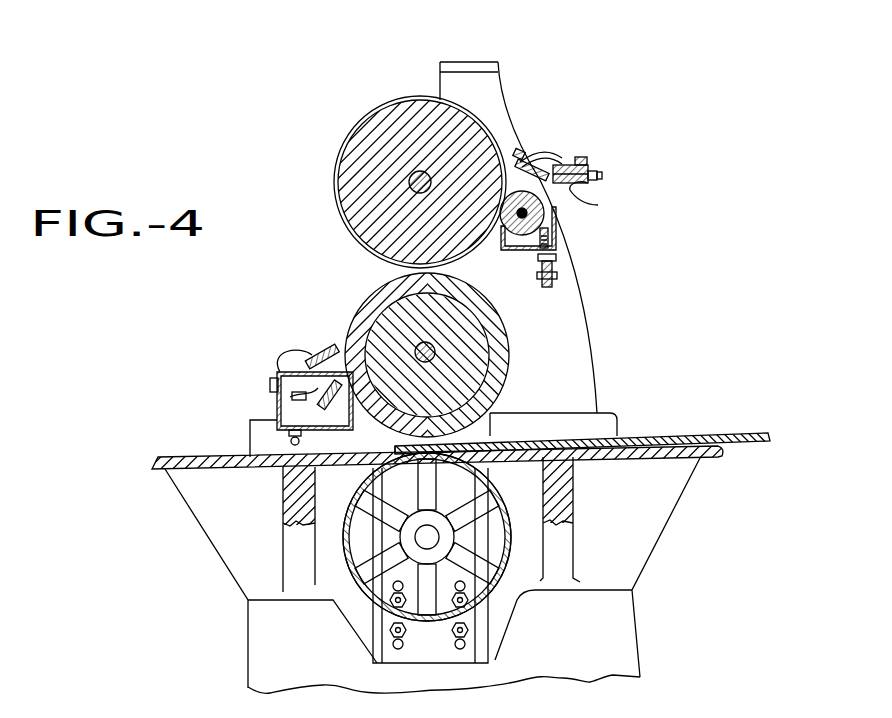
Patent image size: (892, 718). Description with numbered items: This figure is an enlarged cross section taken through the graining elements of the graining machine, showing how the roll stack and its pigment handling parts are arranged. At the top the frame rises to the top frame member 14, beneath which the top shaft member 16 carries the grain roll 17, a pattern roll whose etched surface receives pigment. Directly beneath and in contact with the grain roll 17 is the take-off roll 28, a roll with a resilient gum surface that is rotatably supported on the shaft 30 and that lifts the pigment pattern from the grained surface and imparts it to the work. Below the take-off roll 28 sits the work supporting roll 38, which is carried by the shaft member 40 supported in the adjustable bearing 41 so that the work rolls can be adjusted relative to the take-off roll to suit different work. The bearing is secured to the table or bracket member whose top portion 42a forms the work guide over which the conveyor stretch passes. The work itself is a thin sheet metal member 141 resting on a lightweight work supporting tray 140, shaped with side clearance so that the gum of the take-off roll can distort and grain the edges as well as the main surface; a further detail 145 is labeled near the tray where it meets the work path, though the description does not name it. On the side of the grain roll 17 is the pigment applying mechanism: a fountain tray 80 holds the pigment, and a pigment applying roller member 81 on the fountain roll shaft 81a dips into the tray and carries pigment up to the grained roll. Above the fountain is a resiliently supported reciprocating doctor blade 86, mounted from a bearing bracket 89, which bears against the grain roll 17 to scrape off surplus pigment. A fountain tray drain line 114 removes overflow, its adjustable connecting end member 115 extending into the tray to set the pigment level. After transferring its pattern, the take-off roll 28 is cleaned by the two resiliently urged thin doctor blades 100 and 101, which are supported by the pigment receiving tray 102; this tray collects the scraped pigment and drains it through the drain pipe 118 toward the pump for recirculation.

The top frame member 14 is at (500, 69).
The top shaft member 16 is at (385, 224).
The grain roll 17 is at (350, 146).
The take-off roll 28 is at (502, 320).
The shaft 30 is at (433, 354).
The work supporting roll 38 is at (498, 574).
The shaft member 40 is at (418, 551).
The adjustable bearing 41 is at (457, 653).
The top portion of table member 42a is at (227, 457).
The fountain tray 80 is at (558, 246).
The pigment applying roller member 81 is at (546, 208).
The fountain roll shaft 81a is at (551, 223).
The doctor blade 86 is at (510, 157).
The bearing bracket 89 is at (596, 199).
The doctor blade 100 is at (342, 352).
The doctor blade 101 is at (328, 353).
The pigment receiving tray 102 is at (277, 398).
The fountain tray drain line 114 is at (554, 284).
The connecting end member 115 is at (540, 246).
The drain pipe 118 is at (288, 440).
The work supporting tray 140 is at (615, 452).
The work member 141 is at (667, 436).
The strip end 145 is at (400, 447).